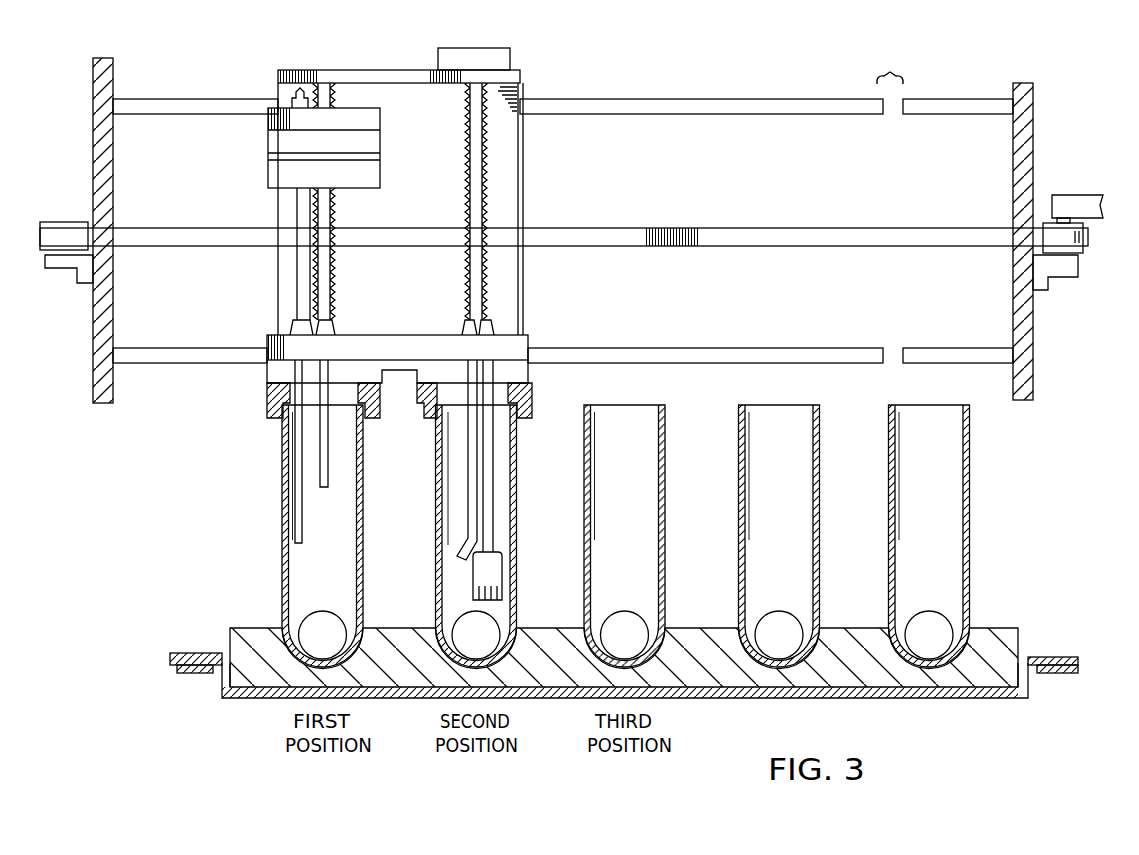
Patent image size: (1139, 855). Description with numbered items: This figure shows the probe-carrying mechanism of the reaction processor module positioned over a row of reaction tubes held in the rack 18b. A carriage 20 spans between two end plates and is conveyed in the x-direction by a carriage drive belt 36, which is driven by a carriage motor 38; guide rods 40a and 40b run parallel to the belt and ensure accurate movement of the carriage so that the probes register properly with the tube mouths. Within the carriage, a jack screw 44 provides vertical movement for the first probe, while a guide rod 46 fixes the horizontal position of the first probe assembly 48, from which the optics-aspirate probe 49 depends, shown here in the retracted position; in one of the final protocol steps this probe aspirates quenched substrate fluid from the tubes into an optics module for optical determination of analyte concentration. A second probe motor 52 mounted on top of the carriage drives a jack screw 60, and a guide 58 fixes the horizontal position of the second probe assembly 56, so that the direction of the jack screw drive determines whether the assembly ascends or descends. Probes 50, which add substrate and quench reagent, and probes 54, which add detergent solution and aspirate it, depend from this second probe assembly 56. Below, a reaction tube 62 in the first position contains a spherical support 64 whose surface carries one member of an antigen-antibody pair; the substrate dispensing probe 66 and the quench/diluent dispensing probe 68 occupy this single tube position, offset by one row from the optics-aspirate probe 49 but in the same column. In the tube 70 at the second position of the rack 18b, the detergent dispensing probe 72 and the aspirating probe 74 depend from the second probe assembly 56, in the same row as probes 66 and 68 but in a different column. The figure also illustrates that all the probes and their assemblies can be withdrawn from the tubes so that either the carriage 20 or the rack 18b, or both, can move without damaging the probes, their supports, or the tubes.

The rack 18b is at (1068, 657).
The carriage 20 is at (519, 147).
The carriage drive belt 36 is at (779, 232).
The carriage motor 38 is at (1087, 202).
The guide rod 40a is at (791, 351).
The guide rod 40b is at (781, 100).
The jack screw 44 is at (330, 289).
The guide rod 46 is at (325, 268).
The first probe assembly 48 is at (267, 122).
The optics-aspirate probe 49 is at (296, 202).
The probe 50 is at (300, 322).
The second probe motor 52 is at (512, 48).
The probe 54 is at (490, 321).
The second probe assembly 56 is at (520, 345).
The guide 58 is at (479, 183).
The jack screw 60 is at (486, 213).
The reaction tube 62 is at (281, 571).
The spherical support 64 is at (331, 648).
The substrate dispensing probe 66 is at (296, 478).
The quench/diluent dispensing probe 68 is at (326, 460).
The tube 70 is at (515, 453).
The detergent dispensing probe 72 is at (468, 512).
The aspirating probe 74 is at (490, 517).